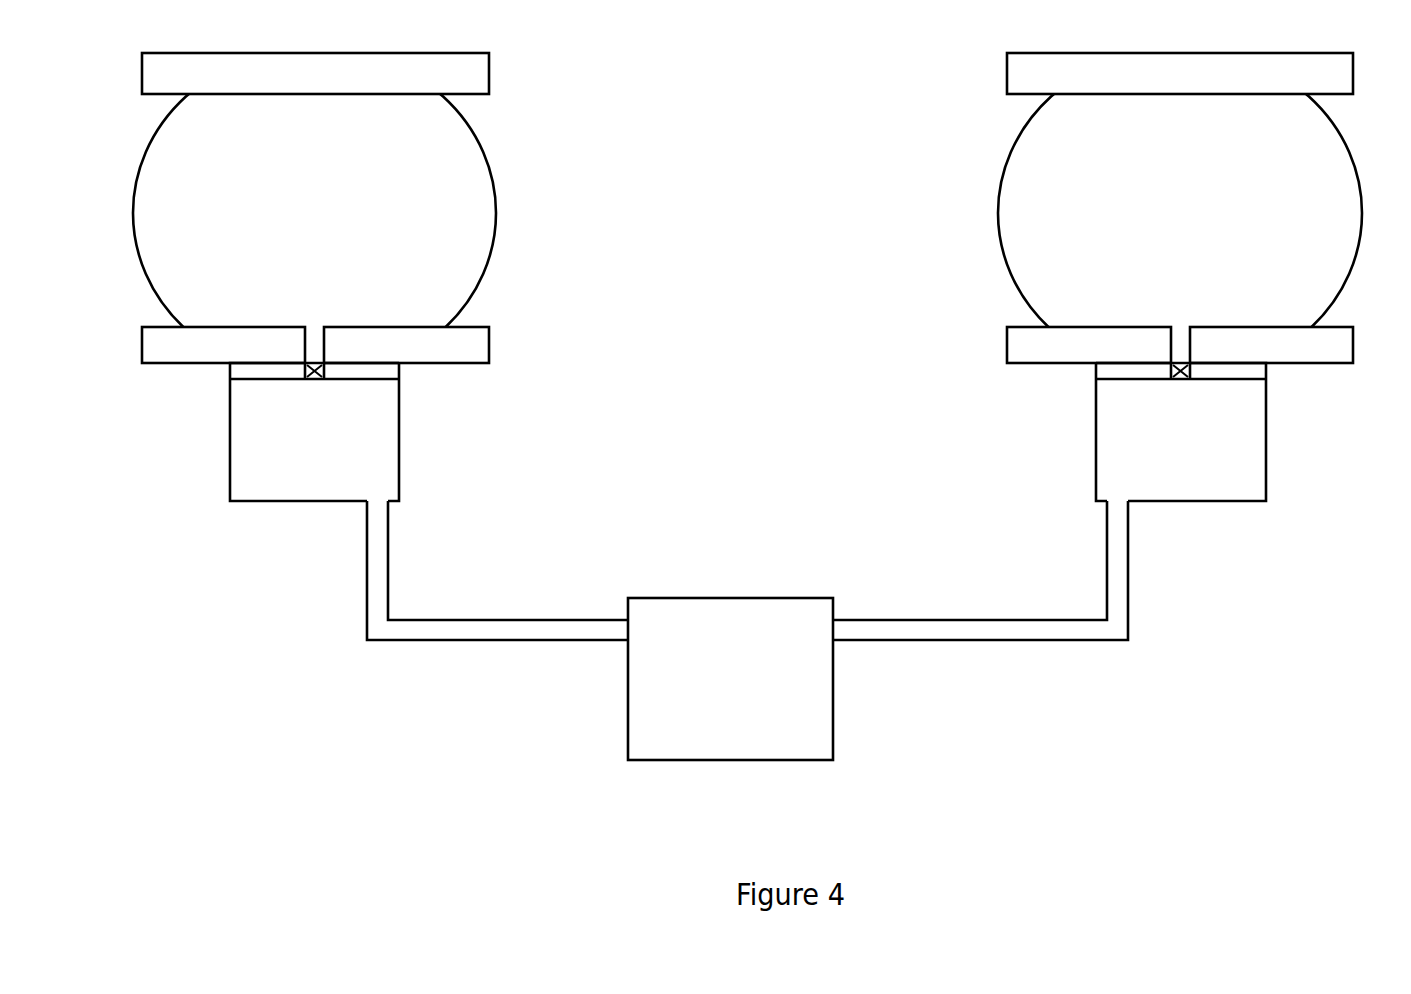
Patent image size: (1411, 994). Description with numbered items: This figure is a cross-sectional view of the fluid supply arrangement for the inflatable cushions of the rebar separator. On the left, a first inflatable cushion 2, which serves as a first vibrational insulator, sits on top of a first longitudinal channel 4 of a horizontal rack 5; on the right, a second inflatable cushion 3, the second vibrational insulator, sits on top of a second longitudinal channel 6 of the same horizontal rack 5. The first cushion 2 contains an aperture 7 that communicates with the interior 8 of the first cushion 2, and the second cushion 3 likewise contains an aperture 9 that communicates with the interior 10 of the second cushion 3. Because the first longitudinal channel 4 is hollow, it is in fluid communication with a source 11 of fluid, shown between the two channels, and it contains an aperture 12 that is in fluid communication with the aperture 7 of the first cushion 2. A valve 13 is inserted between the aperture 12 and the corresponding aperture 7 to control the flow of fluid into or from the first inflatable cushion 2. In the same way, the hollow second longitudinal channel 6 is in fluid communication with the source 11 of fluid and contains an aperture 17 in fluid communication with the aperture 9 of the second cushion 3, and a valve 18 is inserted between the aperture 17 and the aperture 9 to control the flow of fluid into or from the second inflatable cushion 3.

The first inflatable cushion 2 is at (437, 191).
The second inflatable cushion 3 is at (1070, 175).
The first longitudinal channel 4 is at (383, 415).
The horizontal rack 5 is at (277, 500).
The second longitudinal channel 6 is at (1115, 430).
The aperture 7 is at (315, 338).
The interior 8 is at (405, 256).
The aperture 9 is at (1178, 337).
The interior 10 is at (1073, 250).
The source of fluid 11 is at (706, 625).
The aperture 12 is at (312, 381).
The valve 13 is at (318, 371).
The aperture 17 is at (1180, 380).
The valve 18 is at (1172, 372).